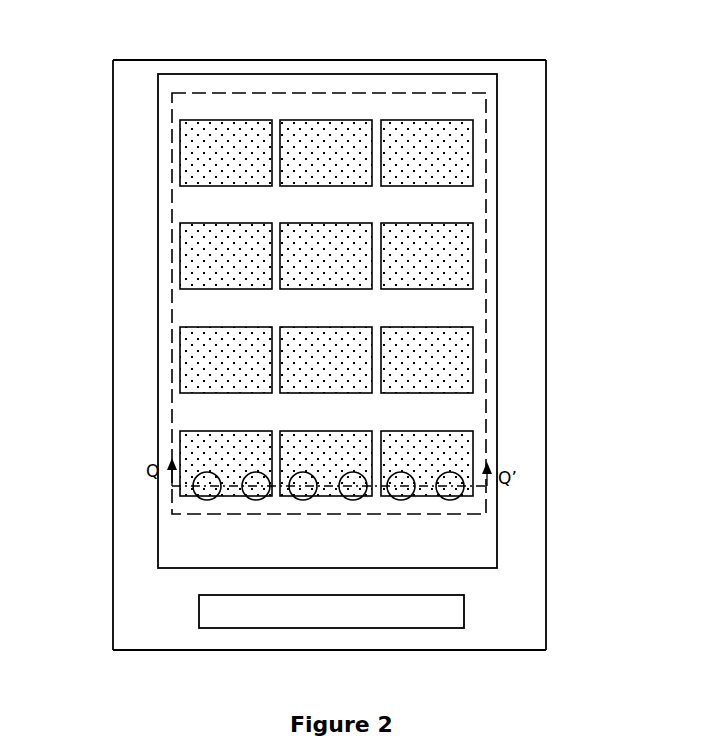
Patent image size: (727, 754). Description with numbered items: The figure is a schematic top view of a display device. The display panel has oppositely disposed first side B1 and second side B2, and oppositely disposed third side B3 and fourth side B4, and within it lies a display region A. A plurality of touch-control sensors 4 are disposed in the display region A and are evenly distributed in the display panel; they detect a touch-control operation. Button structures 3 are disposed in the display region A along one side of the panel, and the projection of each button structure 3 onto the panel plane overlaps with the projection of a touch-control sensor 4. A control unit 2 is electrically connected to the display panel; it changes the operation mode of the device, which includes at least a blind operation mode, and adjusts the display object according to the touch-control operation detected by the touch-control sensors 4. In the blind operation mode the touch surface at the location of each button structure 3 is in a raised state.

The first side B1 is at (329, 667).
The second side B2 is at (329, 37).
The third side B3 is at (69, 355).
The fourth side B4 is at (592, 355).
The display region A is at (385, 303).
The touch-control sensor 4 is at (384, 300).
The button structure 3 is at (396, 455).
The control unit 2 is at (396, 590).